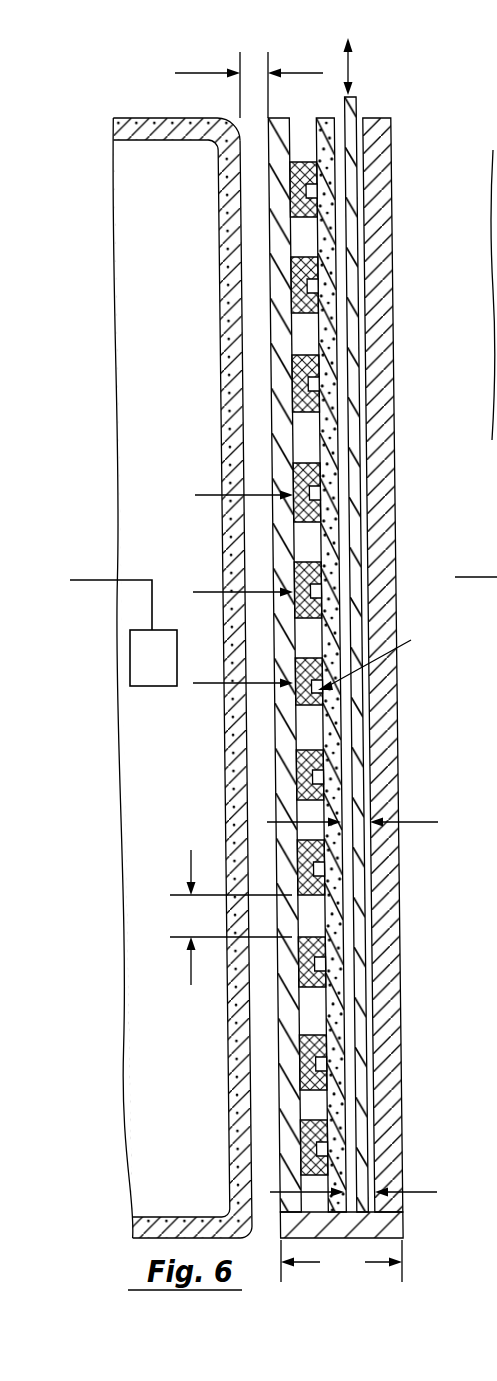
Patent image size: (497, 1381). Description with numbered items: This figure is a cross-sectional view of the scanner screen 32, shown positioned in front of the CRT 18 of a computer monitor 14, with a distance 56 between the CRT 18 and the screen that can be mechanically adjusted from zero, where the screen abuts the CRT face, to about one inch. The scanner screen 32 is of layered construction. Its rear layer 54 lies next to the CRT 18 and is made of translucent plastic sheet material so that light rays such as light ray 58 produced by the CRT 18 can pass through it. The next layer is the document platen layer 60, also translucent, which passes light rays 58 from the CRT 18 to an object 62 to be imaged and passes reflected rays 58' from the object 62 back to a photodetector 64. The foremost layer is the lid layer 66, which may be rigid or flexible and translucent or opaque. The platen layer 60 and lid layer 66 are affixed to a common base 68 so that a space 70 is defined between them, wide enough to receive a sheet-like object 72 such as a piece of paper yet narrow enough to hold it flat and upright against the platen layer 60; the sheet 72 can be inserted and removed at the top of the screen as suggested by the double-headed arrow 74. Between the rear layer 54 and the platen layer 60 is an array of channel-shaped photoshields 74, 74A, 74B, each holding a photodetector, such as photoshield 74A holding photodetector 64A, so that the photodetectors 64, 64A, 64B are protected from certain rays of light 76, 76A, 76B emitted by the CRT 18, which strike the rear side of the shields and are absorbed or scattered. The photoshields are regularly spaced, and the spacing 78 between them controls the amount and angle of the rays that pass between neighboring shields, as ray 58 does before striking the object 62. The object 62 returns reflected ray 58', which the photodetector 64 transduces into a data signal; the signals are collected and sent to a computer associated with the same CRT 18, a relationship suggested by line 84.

The computer monitor 14 is at (131, 663).
The CRT 18 is at (217, 128).
The scanner screen 32 is at (302, 18).
The rear layer 54 is at (295, 112).
The distance 56 is at (187, 85).
The light ray 58 is at (253, 665).
The reflected ray 58' is at (385, 655).
The document platen layer 60 is at (322, 118).
The object 62 is at (253, 732).
The photodetector 64 is at (345, 650).
The photodetector 64A is at (315, 592).
The photodetector 64B is at (312, 495).
The lid layer 66 is at (377, 118).
The base 68 is at (390, 1228).
The space 70 is at (360, 112).
The sheet-like object 72 is at (352, 97).
The channel-shaped photoshield 74 is at (352, 62).
The channel-shaped photoshield 74A is at (295, 607).
The channel-shaped photoshield 74B is at (295, 512).
The ray of light 76 is at (205, 683).
The ray of light 76A is at (207, 590).
The ray of light 76B is at (207, 493).
The space between photoshields 78 is at (231, 917).
The line 84 is at (82, 580).